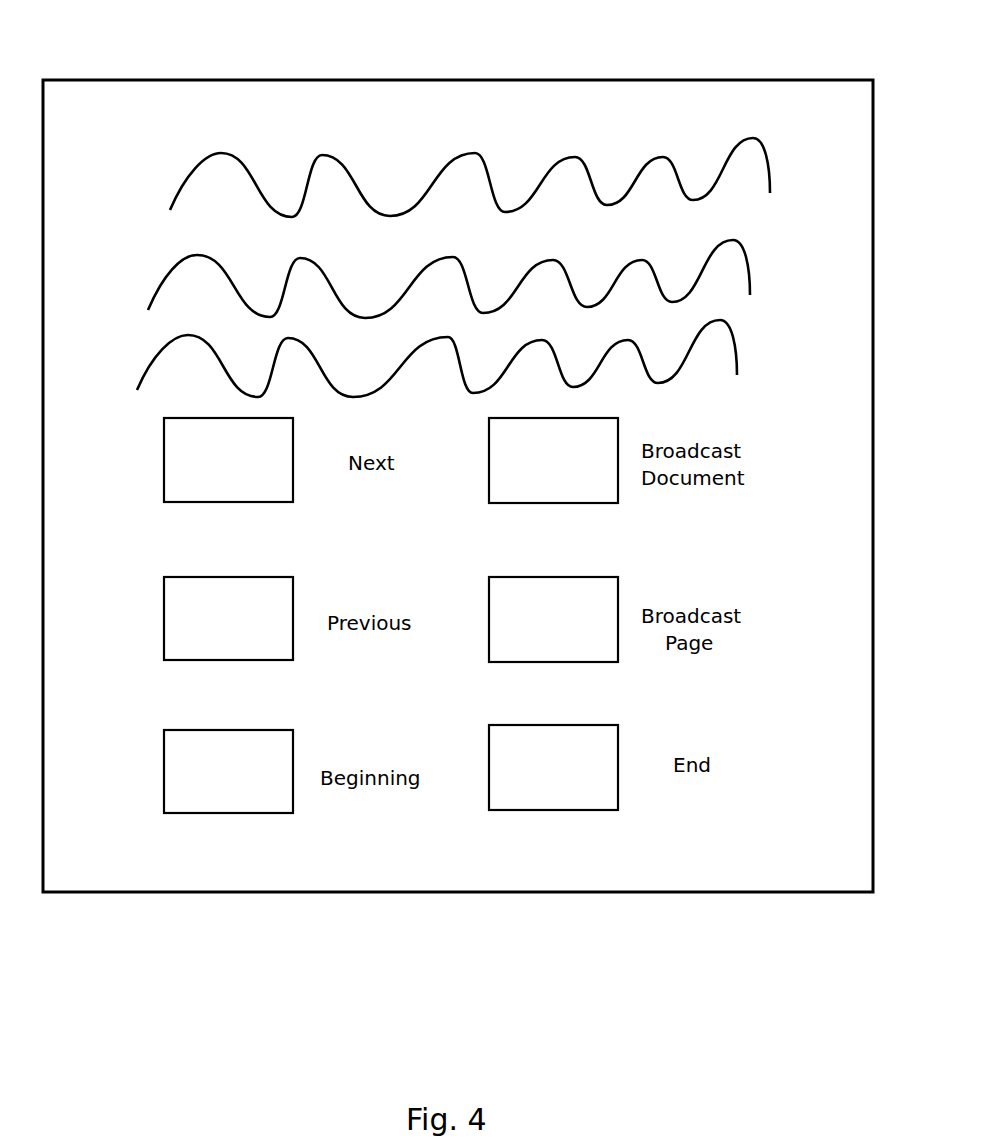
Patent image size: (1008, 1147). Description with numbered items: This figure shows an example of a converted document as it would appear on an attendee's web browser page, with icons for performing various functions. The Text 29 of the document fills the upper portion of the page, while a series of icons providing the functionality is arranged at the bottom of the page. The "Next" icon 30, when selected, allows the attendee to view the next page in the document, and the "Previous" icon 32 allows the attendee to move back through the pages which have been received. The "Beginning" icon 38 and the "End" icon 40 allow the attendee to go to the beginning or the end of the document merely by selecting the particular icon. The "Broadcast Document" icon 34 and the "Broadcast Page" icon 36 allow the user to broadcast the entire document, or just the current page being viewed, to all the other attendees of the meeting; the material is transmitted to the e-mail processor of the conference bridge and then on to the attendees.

The Text 29 is at (310, 356).
The Next icon 30 is at (227, 502).
The Previous icon 32 is at (228, 660).
The Broadcast Document icon 34 is at (554, 503).
The Broadcast Page icon 36 is at (554, 662).
The Beginning icon 38 is at (228, 813).
The End icon 40 is at (557, 810).